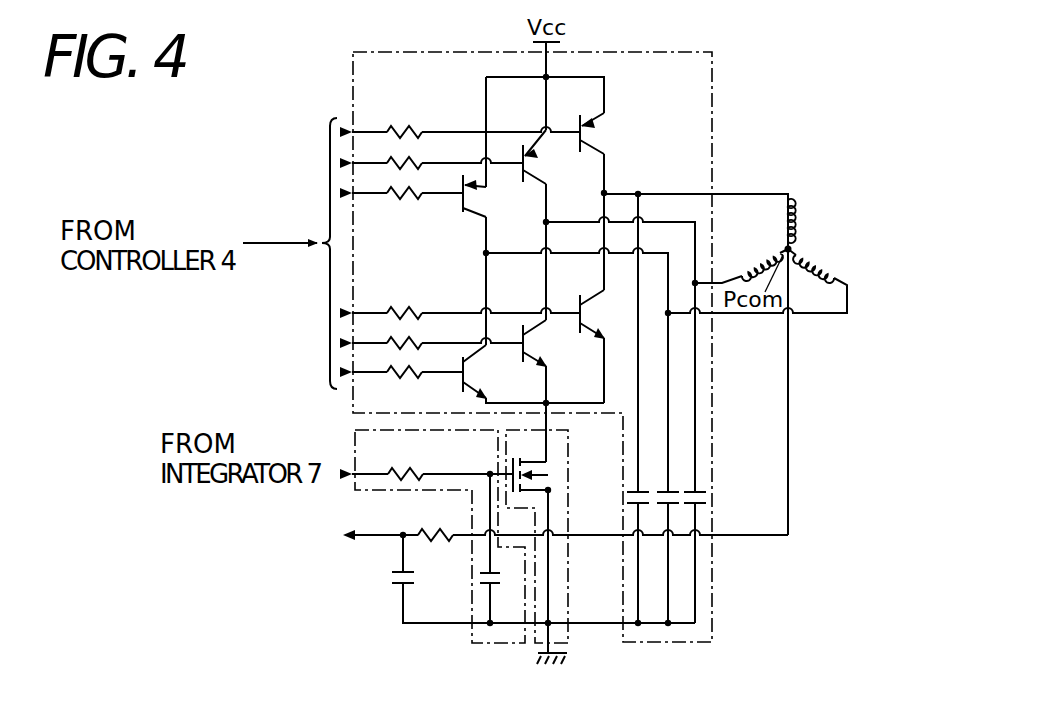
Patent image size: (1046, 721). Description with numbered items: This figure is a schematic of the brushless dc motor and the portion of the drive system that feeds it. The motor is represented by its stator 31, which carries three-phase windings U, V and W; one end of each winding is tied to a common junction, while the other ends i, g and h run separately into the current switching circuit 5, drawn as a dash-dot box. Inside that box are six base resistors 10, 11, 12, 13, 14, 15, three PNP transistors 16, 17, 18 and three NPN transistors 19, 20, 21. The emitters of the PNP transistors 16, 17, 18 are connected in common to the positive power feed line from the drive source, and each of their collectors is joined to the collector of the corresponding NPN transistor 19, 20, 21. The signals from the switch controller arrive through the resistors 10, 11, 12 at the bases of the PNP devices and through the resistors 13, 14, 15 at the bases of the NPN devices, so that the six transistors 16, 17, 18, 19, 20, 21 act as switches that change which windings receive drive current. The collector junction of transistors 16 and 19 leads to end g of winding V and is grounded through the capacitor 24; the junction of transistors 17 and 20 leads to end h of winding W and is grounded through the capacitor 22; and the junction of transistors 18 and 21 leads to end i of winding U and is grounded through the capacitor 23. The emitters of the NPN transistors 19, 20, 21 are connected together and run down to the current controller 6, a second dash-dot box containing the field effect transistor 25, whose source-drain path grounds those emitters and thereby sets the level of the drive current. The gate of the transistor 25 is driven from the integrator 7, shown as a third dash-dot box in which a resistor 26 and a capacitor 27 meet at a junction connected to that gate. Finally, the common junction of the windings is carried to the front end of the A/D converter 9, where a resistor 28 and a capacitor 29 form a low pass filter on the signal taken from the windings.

The current switching circuit 5 is at (680, 50).
The current controller 6 is at (537, 645).
The integrator 7 is at (478, 645).
The A/D converter 9 is at (393, 596).
The resistor 10 is at (407, 122).
The resistor 11 is at (420, 167).
The resistor 12 is at (404, 199).
The resistor 13 is at (410, 306).
The resistor 14 is at (420, 338).
The resistor 15 is at (405, 380).
The PNP transistor 16 is at (606, 119).
The PNP transistor 17 is at (540, 177).
The PNP transistor 18 is at (482, 205).
The NPN transistor 19 is at (598, 300).
The NPN transistor 20 is at (550, 338).
The NPN transistor 21 is at (490, 370).
The capacitor 22 is at (705, 491).
The capacitor 23 is at (676, 490).
The capacitor 24 is at (625, 492).
The field effect transistor 25 is at (555, 470).
The resistor 26 is at (410, 468).
The capacitor 27 is at (495, 587).
The resistor 28 is at (432, 531).
The capacitor 29 is at (416, 572).
The stator 31 is at (802, 238).